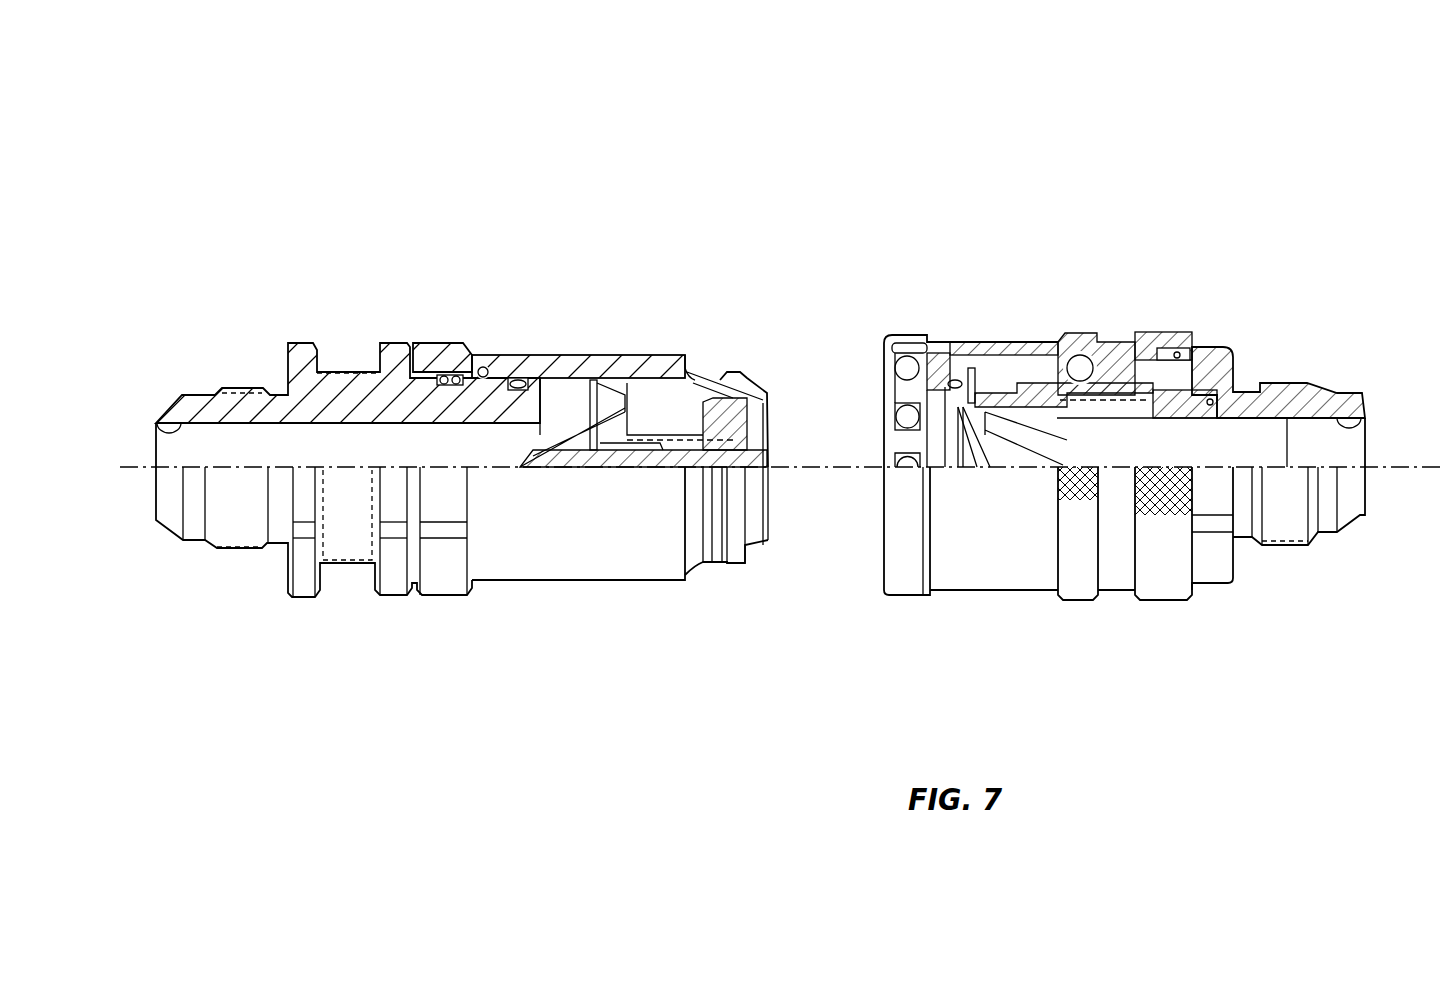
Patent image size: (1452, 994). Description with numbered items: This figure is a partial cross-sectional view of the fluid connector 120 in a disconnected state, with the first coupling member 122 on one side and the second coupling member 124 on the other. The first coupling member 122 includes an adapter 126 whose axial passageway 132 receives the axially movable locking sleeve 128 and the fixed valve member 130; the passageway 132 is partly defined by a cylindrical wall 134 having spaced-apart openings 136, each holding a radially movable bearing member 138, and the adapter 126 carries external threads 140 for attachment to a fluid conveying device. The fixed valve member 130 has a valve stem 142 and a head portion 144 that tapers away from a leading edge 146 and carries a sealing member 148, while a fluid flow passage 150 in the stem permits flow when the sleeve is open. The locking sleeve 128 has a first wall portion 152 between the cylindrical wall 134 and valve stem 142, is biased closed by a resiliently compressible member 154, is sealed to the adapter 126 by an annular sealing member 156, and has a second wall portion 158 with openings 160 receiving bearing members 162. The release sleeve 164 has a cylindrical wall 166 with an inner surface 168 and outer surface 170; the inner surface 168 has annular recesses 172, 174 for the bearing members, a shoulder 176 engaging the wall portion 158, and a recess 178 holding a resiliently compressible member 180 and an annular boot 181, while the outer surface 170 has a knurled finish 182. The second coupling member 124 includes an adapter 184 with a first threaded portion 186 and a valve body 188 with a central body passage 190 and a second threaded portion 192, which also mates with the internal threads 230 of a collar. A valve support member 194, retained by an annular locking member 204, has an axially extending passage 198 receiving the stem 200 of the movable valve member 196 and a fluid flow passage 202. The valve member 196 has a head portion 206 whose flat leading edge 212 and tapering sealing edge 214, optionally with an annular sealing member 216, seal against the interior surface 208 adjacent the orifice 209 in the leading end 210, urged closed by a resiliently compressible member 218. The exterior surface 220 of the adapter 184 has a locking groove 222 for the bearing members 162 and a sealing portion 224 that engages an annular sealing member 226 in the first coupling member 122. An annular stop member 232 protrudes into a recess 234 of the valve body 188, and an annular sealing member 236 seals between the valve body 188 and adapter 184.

The fluid connector 120 is at (1246, 258).
The first coupling member 122 is at (1228, 340).
The second coupling member 124 is at (238, 578).
The adapter 126 is at (1250, 350).
The locking sleeve 128 is at (1060, 425).
The fixed valve member 130 is at (1002, 383).
The axial passageway 132 is at (1365, 425).
The cylindrical wall 134 is at (1145, 332).
The openings 136 is at (1087, 345).
The bearing member 138 is at (1058, 342).
The external threads 140 is at (1305, 383).
The valve stem 142 is at (1212, 420).
The head portion 144 is at (1005, 470).
The leading edge 146 is at (770, 455).
The sealing member 148 is at (990, 470).
The fluid flow passage 150 is at (1020, 470).
The first wall portion 152 is at (1167, 333).
The resiliently compressible member 154 is at (1195, 470).
The annular sealing member 156 is at (1155, 470).
The second wall portion 158 is at (939, 395).
The openings 160 is at (927, 337).
The bearing member 162 is at (907, 343).
The release sleeve 164 is at (888, 326).
The cylindrical wall 166 is at (967, 368).
The inner surface 168 is at (618, 355).
The outer surface 170 is at (1155, 332).
The annular recess 172 is at (1068, 342).
The annular recess 174 is at (891, 325).
The shoulder 176 is at (1045, 375).
The recess 178 is at (1140, 333).
The resiliently compressible member 180 is at (1150, 332).
The annular boot 181 is at (1180, 335).
The knurled finish 182 is at (1078, 590).
The adapter 184 is at (436, 350).
The first threaded portion 186 is at (450, 368).
The valve body 188 is at (338, 393).
The central body passage 190 is at (157, 422).
The second threaded portion 192 is at (230, 386).
The valve support member 194 is at (552, 433).
The valve member 196 is at (613, 478).
The axially extending passage 198 is at (530, 462).
The stem 200 is at (593, 468).
The fluid flow passage 202 is at (597, 403).
The annular locking member 204 is at (563, 468).
The head portion 206 is at (703, 470).
The interior surface 208 is at (690, 390).
The orifice 209 is at (770, 422).
The leading end 210 is at (768, 523).
The leading edge 212 is at (935, 470).
The sealing edge 214 is at (760, 392).
The annular sealing member 216 is at (745, 543).
The resiliently compressible member 218 is at (607, 455).
The exterior surface 220 is at (637, 355).
The locking groove 222 is at (715, 373).
The sealing portion 224 is at (755, 385).
The annular sealing member 226 is at (947, 384).
The internal threads 230 is at (360, 378).
The annular stop member 232 is at (460, 390).
The recess 234 is at (448, 417).
The annular sealing member 236 is at (515, 384).